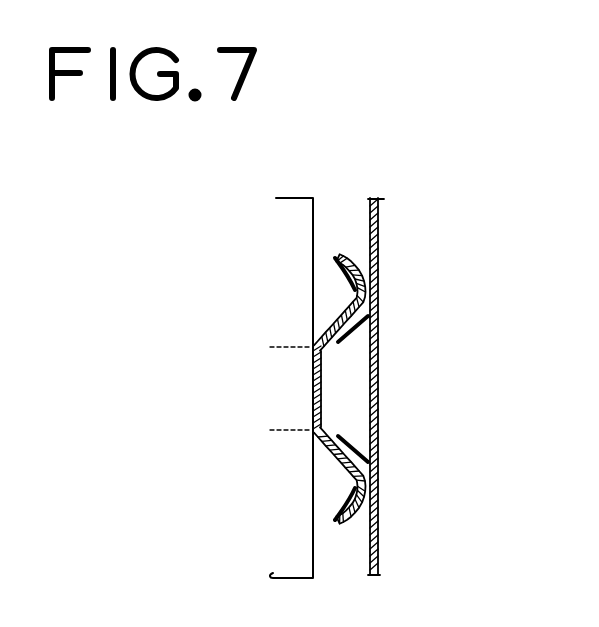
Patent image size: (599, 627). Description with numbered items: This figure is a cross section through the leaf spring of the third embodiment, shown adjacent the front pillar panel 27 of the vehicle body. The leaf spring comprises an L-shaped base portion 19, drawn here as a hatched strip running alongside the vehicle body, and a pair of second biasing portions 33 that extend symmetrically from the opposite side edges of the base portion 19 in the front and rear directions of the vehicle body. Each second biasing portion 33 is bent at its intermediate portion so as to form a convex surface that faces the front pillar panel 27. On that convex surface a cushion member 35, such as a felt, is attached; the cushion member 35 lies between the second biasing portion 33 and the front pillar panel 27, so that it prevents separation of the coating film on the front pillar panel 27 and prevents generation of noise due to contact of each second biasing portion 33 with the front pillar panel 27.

The base portion 19 is at (318, 409).
The front pillar panel 27 is at (380, 348).
The second biasing portion 33 is at (343, 257).
The cushion member 35 is at (366, 318).